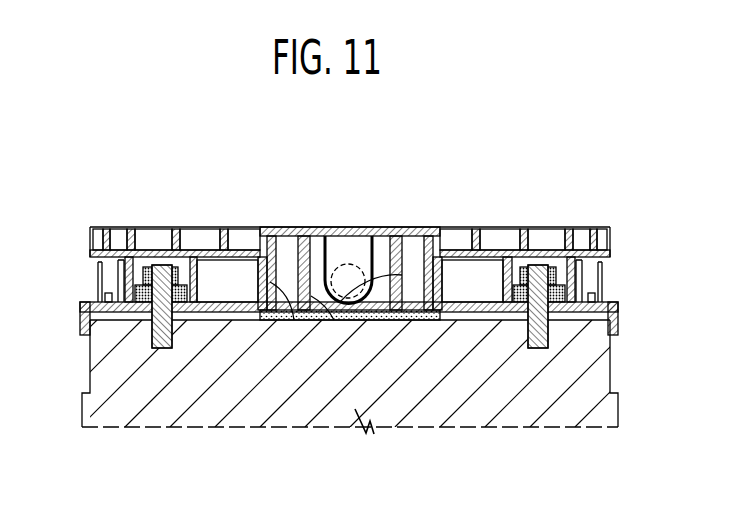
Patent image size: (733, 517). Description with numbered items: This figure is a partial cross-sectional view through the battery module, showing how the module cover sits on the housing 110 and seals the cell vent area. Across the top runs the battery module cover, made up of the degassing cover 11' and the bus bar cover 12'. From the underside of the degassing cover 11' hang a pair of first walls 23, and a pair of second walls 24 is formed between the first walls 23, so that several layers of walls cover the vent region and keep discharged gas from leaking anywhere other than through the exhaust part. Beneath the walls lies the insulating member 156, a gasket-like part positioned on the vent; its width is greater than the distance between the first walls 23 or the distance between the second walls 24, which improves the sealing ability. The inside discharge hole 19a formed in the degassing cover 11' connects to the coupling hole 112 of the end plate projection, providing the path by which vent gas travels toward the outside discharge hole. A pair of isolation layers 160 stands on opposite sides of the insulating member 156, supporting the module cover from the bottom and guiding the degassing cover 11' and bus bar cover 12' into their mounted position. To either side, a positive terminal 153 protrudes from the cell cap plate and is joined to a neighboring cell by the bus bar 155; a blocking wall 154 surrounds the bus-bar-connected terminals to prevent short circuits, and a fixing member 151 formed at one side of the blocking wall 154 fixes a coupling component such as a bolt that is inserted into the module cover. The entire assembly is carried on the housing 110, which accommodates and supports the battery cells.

The degassing cover 11' is at (350, 190).
The bus bar cover 12' is at (350, 201).
The inside discharge hole 19a is at (360, 268).
The first walls 23 is at (352, 306).
The second walls 24 is at (347, 320).
The housing 110 is at (585, 379).
The coupling hole 112 is at (343, 256).
The fixing member 151 is at (106, 292).
The positive terminal 153 is at (156, 346).
The blocking wall 154 is at (122, 281).
The bus bar 155 is at (150, 304).
The insulating member 156 is at (390, 312).
The isolation layers 160 is at (232, 290).